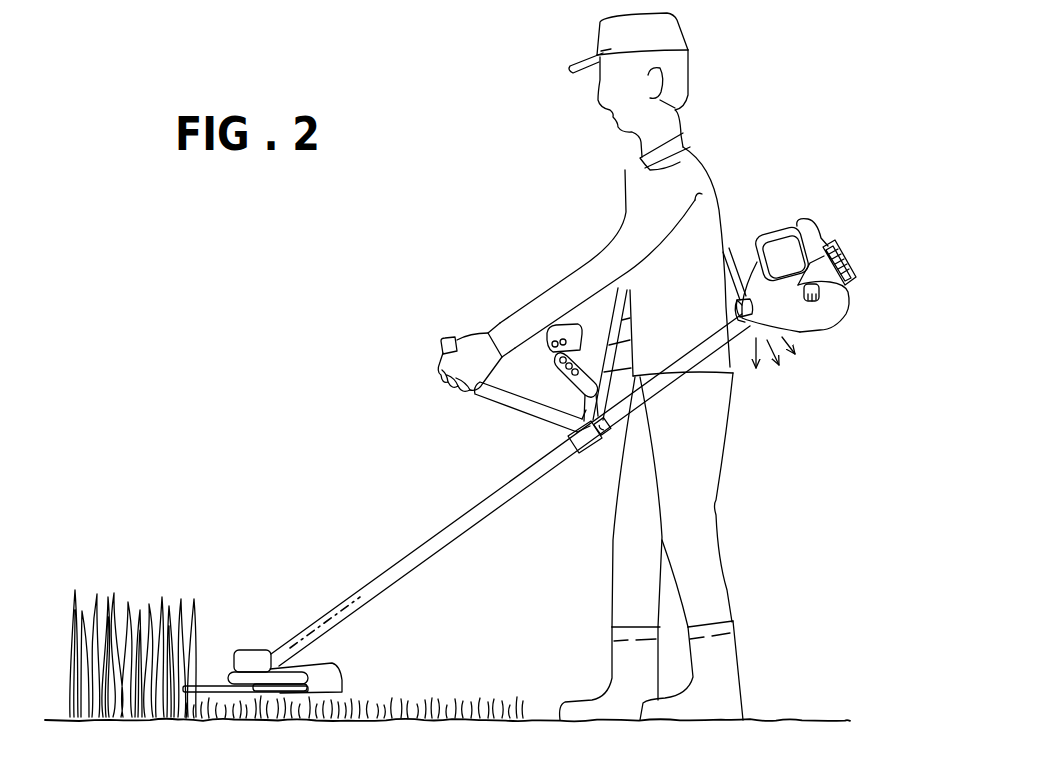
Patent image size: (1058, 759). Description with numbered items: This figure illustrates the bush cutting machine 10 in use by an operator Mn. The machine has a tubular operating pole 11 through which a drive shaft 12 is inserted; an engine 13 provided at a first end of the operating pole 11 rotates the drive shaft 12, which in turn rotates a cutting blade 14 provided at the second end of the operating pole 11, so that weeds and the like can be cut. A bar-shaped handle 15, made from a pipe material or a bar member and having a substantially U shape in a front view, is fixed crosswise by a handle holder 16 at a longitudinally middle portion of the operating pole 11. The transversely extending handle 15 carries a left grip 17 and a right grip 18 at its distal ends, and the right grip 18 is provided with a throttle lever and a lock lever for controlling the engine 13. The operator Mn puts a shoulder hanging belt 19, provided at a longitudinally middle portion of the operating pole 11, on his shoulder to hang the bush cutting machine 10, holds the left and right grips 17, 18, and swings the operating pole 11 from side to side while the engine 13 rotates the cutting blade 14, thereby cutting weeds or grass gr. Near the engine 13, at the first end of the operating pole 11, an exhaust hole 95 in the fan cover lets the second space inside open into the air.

The operator Mn is at (548, 108).
The bush cutting machine 10 is at (845, 174).
The operating pole 11 is at (318, 623).
The drive shaft 12 is at (338, 622).
The engine 13 is at (832, 318).
The cutting blade 14 is at (202, 682).
The handle 15 is at (508, 400).
The handle holder 16 is at (592, 448).
The left grip 17 is at (440, 350).
The right grip 18 is at (545, 365).
The shoulder hanging belt 19 is at (605, 310).
The exhaust hole 95 is at (741, 350).
The grass gr is at (133, 580).